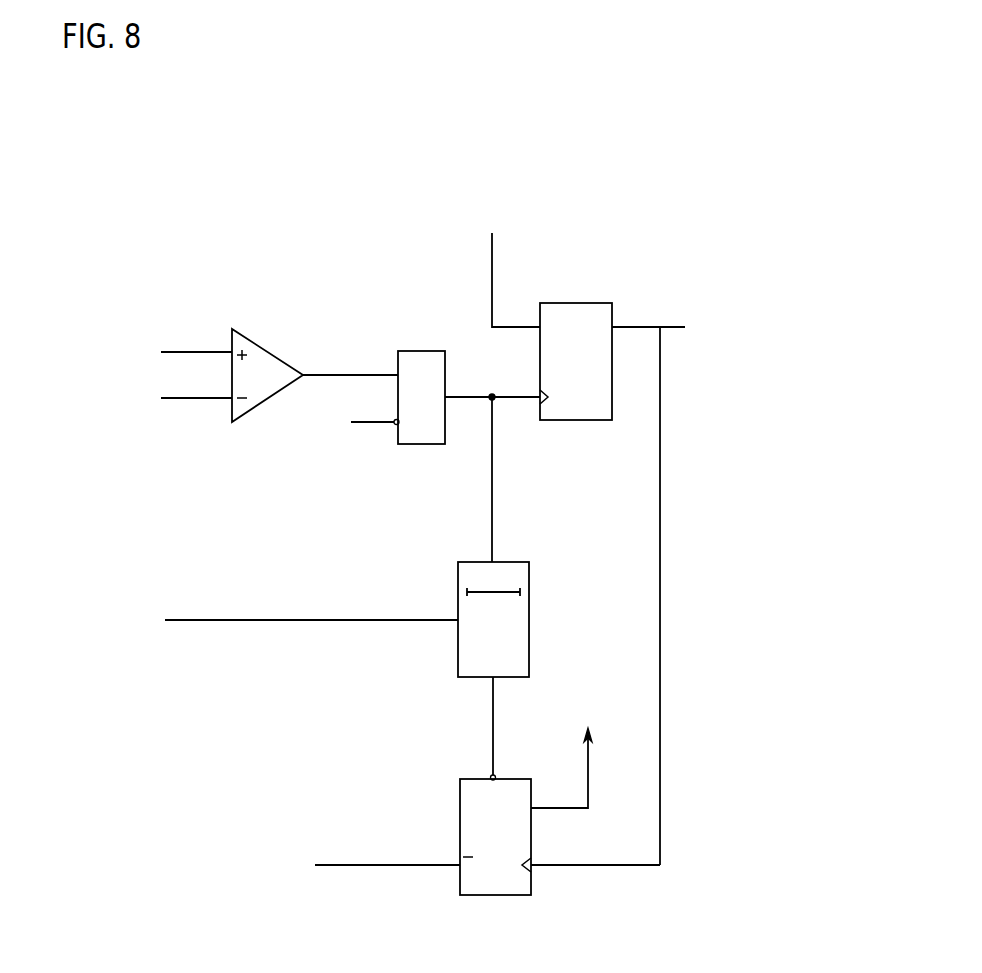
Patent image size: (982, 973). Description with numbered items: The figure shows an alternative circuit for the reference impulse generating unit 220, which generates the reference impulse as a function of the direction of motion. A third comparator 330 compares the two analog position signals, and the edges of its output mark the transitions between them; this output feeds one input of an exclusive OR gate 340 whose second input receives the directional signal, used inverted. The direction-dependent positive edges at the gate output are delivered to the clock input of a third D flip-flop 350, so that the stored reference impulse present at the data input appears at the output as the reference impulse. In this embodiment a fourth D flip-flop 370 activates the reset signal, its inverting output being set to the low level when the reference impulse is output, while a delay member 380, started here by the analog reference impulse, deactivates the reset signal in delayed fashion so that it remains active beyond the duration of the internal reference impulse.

The reference impulse generating unit 220 is at (358, 186).
The third comparator 330 is at (258, 357).
The exclusive OR gate 340 is at (417, 358).
The third D flip-flop 350 is at (580, 322).
The fourth D flip-flop 370 is at (513, 887).
The delay member 380 is at (525, 618).